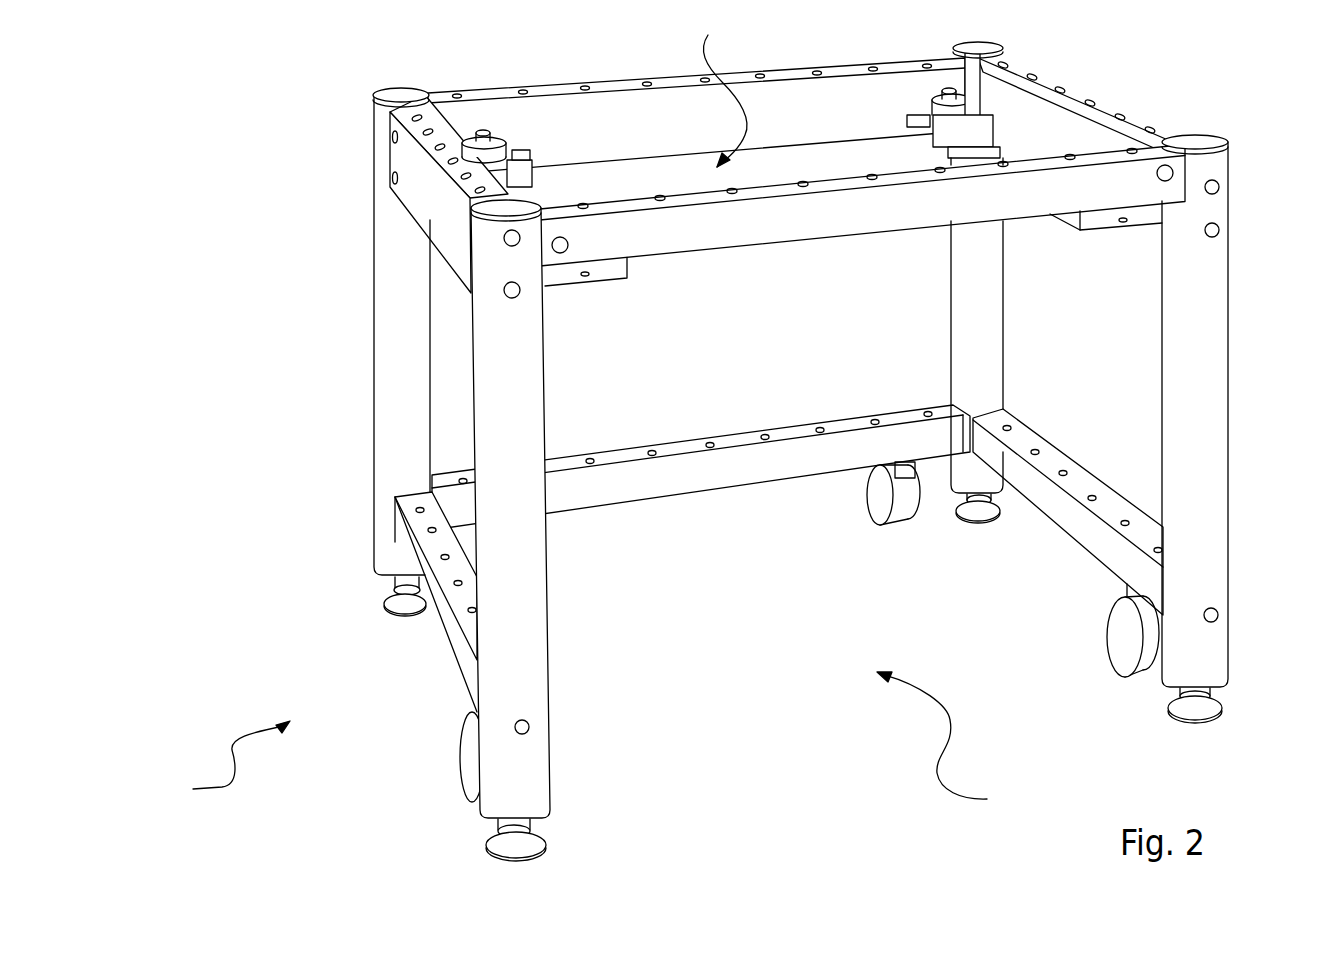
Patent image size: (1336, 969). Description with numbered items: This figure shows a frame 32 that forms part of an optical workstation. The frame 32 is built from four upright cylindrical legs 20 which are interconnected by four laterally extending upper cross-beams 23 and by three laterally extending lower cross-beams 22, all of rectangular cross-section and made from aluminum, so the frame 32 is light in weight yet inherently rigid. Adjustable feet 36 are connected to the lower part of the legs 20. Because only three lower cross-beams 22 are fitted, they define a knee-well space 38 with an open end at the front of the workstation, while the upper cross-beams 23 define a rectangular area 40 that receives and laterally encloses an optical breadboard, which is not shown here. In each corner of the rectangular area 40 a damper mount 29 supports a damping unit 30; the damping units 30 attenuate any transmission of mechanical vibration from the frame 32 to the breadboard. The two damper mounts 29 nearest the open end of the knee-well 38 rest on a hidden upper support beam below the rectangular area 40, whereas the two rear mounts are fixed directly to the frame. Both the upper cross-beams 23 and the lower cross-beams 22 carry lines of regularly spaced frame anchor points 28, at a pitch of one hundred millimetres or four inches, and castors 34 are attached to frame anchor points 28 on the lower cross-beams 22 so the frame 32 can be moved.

The upright cylindrical leg 20 is at (383, 412).
The lower cross-beam 22 is at (460, 652).
The upper cross-beam 23 is at (797, 93).
The frame anchor point 28 is at (440, 147).
The damper mount 29 is at (523, 178).
The damping unit 30 is at (510, 140).
The frame 32 is at (192, 806).
The castor 34 is at (472, 777).
The adjustable foot 36 is at (400, 603).
The knee-well space 38 is at (1030, 812).
The rectangular area 40 is at (752, 47).